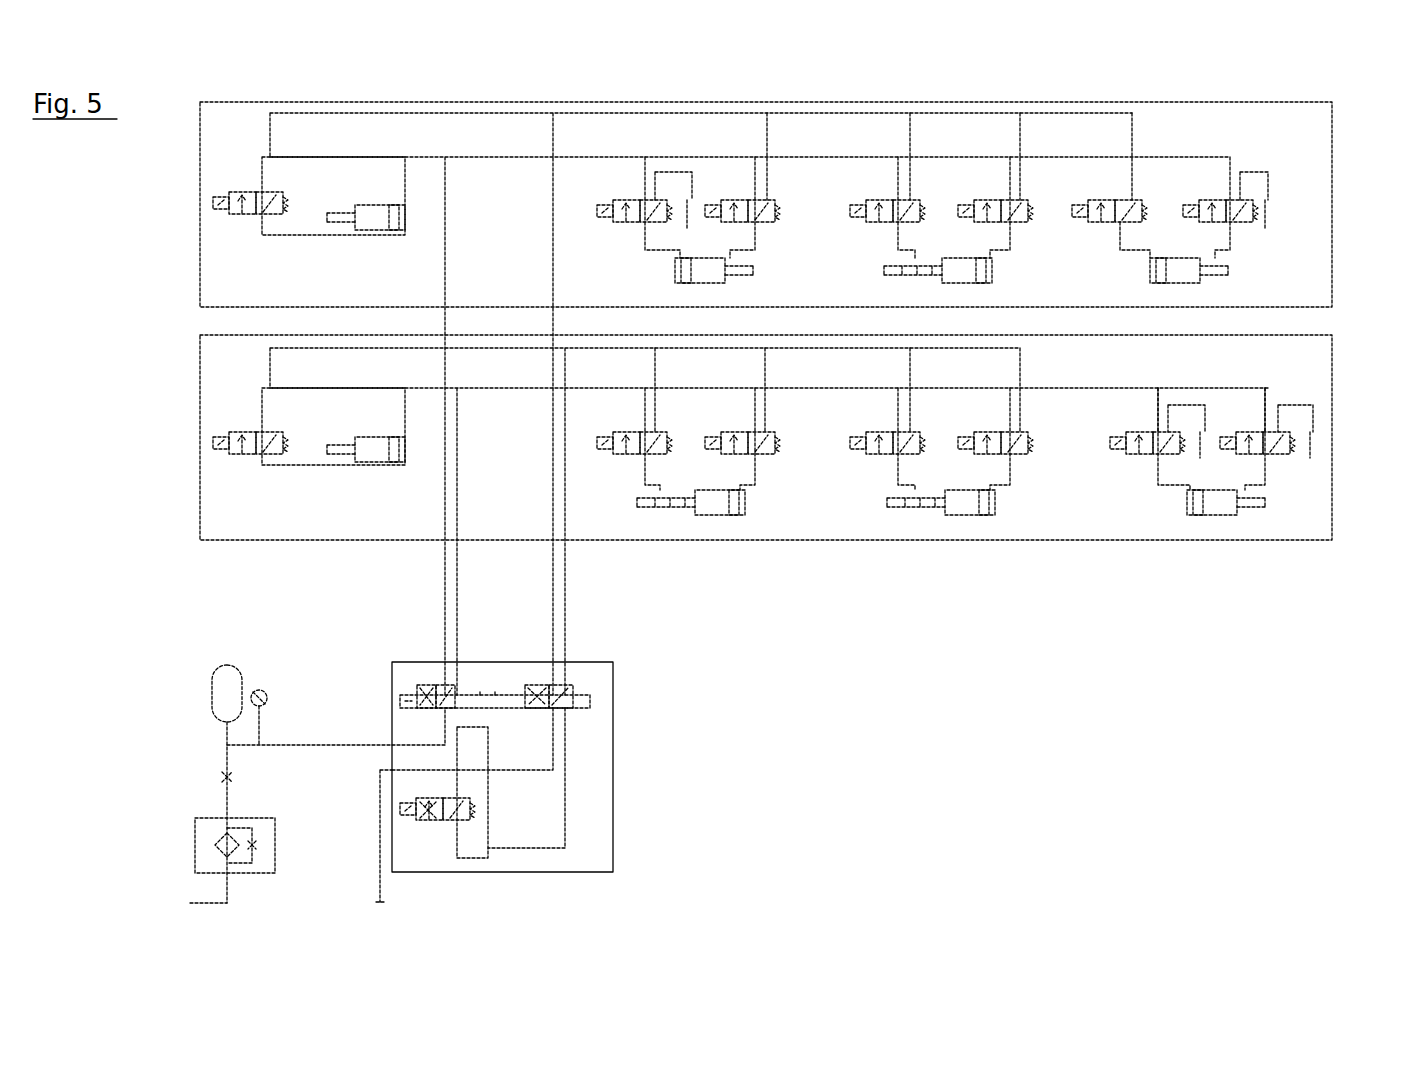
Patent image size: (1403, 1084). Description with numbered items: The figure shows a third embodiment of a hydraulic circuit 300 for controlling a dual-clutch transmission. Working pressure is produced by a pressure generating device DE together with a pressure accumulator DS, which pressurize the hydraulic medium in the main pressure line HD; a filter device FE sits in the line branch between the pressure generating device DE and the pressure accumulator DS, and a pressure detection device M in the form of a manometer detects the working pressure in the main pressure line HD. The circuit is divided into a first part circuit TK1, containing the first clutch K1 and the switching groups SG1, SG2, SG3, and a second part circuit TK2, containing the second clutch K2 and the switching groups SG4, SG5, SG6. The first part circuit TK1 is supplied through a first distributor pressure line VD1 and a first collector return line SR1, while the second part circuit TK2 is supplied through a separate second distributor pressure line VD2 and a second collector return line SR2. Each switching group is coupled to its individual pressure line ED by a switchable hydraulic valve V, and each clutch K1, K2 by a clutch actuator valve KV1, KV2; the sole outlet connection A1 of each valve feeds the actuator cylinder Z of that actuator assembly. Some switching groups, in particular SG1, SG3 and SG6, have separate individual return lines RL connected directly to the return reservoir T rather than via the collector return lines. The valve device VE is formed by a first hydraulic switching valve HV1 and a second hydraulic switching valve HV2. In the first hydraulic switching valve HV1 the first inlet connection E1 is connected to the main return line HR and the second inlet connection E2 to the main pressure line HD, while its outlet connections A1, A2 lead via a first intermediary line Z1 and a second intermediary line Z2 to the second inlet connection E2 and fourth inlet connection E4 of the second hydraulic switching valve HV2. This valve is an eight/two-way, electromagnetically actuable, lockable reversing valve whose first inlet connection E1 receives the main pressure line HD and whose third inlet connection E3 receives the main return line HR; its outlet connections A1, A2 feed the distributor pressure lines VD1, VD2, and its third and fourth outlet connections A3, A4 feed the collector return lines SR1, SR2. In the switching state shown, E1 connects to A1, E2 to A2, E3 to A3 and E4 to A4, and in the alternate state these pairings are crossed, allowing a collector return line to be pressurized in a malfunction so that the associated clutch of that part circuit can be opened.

The hydraulic circuit 300 is at (160, 266).
The first part circuit TK1 is at (1336, 113).
The second part circuit TK2 is at (1336, 343).
The first collector return line SR1 is at (416, 113).
The second collector return line SR2 is at (312, 348).
The first distributor pressure line VD1 is at (350, 157).
The second distributor pressure line VD2 is at (322, 390).
The clutch actuator valve KV1 is at (234, 218).
The clutch actuator valve KV2 is at (234, 458).
The first clutch K1 is at (376, 246).
The second clutch K2 is at (370, 472).
The individual pressure line ED is at (262, 170).
The individual return line RL is at (270, 150).
The return reservoir T is at (336, 917).
The switchable hydraulic valve V is at (599, 226).
The actuator cylinder Z is at (390, 186).
The switching group SG1 is at (665, 266).
The switching group SG2 is at (890, 255).
The switching group SG3 is at (1142, 262).
The switching group SG4 is at (690, 518).
The switching group SG5 is at (965, 518).
The switching group SG6 is at (1205, 518).
The valve device VE is at (613, 806).
The first hydraulic switching valve HV1 is at (429, 826).
The second hydraulic switching valve HV2 is at (602, 700).
The first intermediary line Z1 is at (476, 810).
The second intermediary line Z2 is at (553, 772).
The main pressure line HD is at (320, 746).
The main return line HR is at (378, 788).
The pressure accumulator DS is at (228, 666).
The pressure detection device M is at (260, 690).
The filter device FE is at (193, 840).
The pressure generating device DE is at (193, 906).
The first inlet connection E1 is at (333, 482).
The second inlet connection E2 is at (377, 482).
The third inlet connection E3 is at (536, 722).
The fourth inlet connection E4 is at (580, 722).
The first outlet connection A1 is at (355, 541).
The second outlet connection A2 is at (474, 757).
The third outlet connection A3 is at (537, 675).
The fourth outlet connection A4 is at (581, 675).